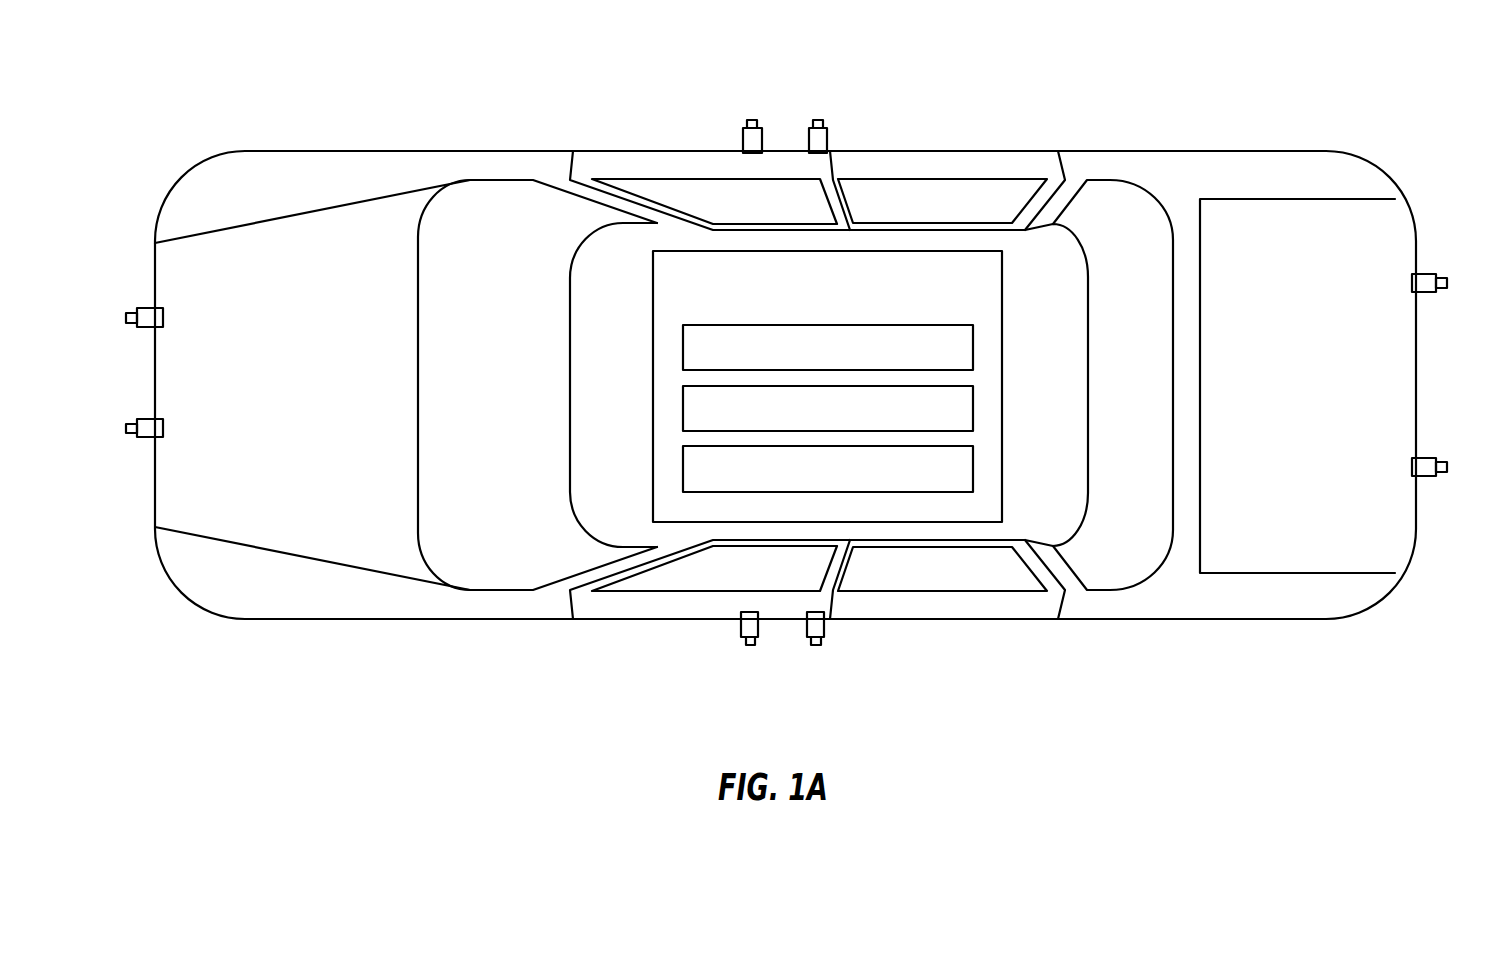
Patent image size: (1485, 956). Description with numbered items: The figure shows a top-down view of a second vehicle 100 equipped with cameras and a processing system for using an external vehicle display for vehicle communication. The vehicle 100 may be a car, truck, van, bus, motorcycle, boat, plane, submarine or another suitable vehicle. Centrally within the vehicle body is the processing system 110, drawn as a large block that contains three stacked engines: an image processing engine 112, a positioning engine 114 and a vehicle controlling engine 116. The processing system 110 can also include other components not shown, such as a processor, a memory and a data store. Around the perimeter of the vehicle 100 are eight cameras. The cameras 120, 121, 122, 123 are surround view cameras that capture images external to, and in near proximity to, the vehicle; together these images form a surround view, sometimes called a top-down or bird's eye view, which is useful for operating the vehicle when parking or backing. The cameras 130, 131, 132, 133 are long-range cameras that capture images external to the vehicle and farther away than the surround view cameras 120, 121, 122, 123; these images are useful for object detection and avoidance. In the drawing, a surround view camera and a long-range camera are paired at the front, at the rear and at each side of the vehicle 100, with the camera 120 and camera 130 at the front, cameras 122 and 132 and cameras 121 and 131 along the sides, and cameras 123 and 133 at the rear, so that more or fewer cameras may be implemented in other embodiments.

The second vehicle 100 is at (303, 151).
The processing system 110 is at (811, 285).
The image processing engine 112 is at (811, 359).
The positioning engine 114 is at (811, 419).
The vehicle controlling engine 116 is at (811, 480).
The camera 120 is at (146, 308).
The camera 121 is at (750, 646).
The camera 122 is at (752, 120).
The camera 123 is at (1424, 293).
The camera 130 is at (146, 419).
The camera 131 is at (816, 646).
The camera 132 is at (818, 120).
The camera 133 is at (1424, 477).